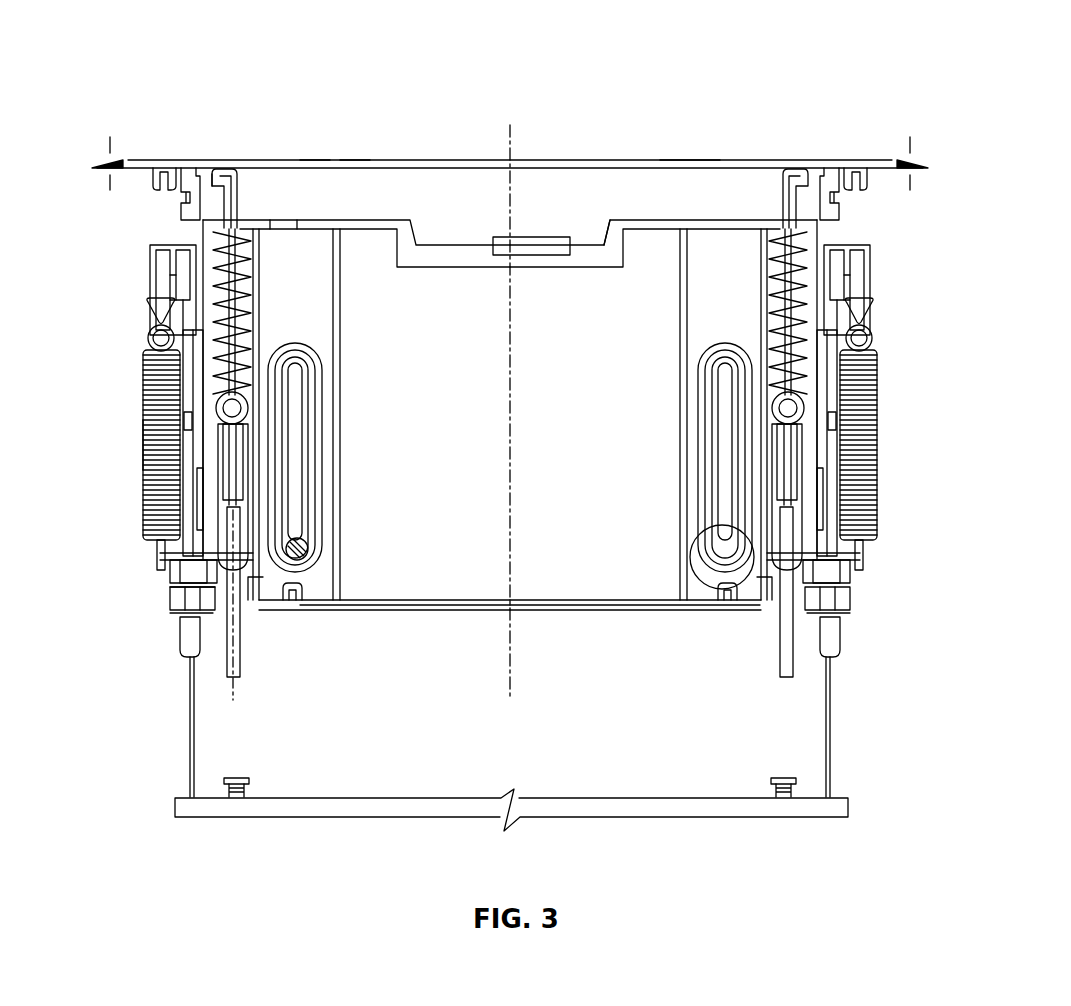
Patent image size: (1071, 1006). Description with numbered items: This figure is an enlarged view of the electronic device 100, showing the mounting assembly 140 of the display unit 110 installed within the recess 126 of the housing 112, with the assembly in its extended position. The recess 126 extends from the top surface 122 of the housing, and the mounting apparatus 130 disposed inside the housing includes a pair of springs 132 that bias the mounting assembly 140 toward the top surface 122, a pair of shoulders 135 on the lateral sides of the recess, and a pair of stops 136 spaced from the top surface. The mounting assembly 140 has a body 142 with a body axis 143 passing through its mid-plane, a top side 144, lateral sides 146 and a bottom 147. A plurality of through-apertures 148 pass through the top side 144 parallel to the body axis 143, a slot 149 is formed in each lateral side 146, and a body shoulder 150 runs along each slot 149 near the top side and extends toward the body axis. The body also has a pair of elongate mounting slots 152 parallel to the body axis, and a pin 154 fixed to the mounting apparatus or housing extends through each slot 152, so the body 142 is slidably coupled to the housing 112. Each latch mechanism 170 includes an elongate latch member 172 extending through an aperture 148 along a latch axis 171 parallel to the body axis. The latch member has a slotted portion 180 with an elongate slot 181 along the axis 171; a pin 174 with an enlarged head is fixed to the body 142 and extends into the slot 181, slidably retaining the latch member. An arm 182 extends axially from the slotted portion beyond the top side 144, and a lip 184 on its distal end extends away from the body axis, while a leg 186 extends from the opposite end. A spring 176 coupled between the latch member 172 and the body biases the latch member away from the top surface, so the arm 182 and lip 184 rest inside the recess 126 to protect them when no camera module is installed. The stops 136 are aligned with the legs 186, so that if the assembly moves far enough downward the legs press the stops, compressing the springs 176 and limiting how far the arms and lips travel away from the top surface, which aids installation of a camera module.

The mounting system 100 is at (106, 42).
The display unit 110 is at (148, 165).
The housing 112 is at (160, 166).
The top surface 122 is at (353, 155).
The recess 126 is at (688, 190).
The mounting apparatus 130 is at (170, 773).
The springs 132 is at (150, 430).
The shoulders 135 is at (145, 377).
The stops 136 is at (250, 790).
The mounting assembly 140 is at (428, 180).
The body 142 is at (478, 624).
The body axis 143 is at (515, 135).
The top side 144 is at (603, 217).
The lateral sides 146 is at (205, 468).
The bottom 147 is at (596, 604).
The through-apertures 148 is at (303, 218).
The slot 149 is at (188, 322).
The body shoulder 150 is at (185, 283).
The elongate mounting slots 152 is at (290, 525).
The pin 154 is at (294, 568).
The latch mechanism 170 is at (316, 154).
The latch axis 171 is at (230, 688).
The latch member 172 is at (217, 494).
The pin 174 is at (220, 416).
The spring 176 is at (210, 243).
The slotted portion 180 is at (217, 524).
The elongate slot 181 is at (217, 553).
The arm 182 is at (236, 195).
The lip 184 is at (213, 172).
The leg 186 is at (224, 628).